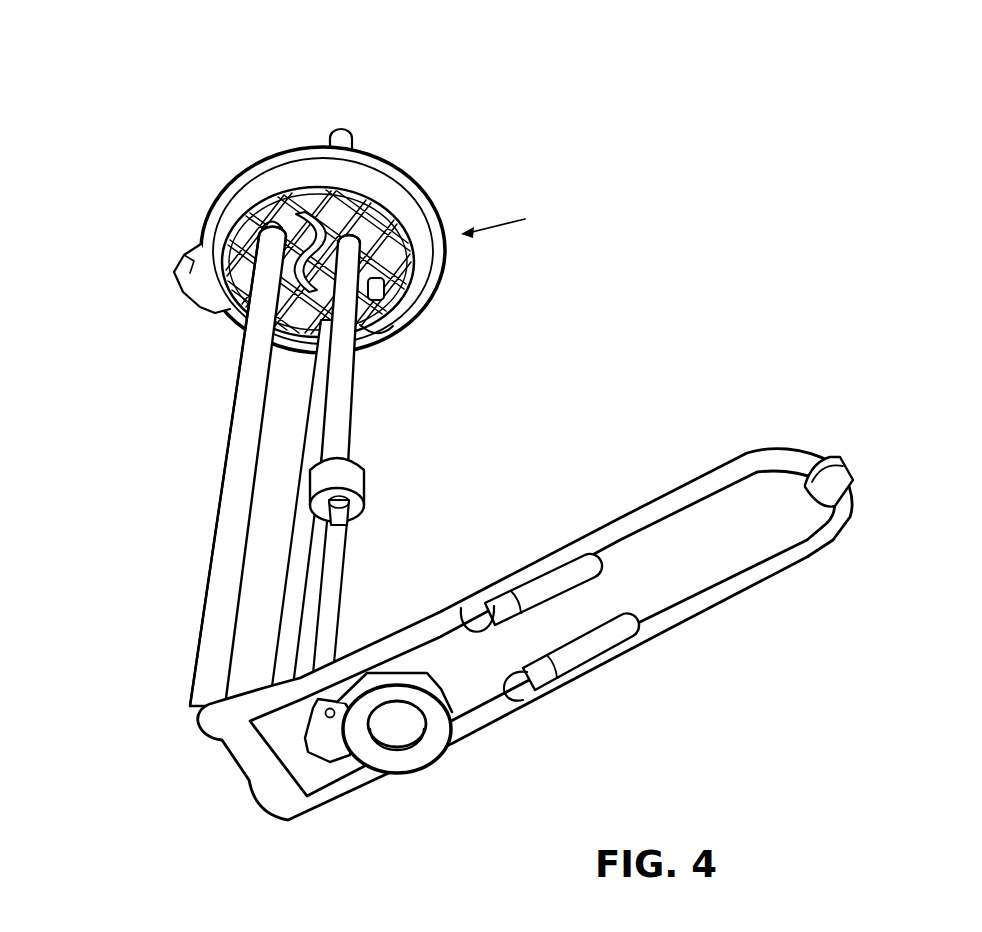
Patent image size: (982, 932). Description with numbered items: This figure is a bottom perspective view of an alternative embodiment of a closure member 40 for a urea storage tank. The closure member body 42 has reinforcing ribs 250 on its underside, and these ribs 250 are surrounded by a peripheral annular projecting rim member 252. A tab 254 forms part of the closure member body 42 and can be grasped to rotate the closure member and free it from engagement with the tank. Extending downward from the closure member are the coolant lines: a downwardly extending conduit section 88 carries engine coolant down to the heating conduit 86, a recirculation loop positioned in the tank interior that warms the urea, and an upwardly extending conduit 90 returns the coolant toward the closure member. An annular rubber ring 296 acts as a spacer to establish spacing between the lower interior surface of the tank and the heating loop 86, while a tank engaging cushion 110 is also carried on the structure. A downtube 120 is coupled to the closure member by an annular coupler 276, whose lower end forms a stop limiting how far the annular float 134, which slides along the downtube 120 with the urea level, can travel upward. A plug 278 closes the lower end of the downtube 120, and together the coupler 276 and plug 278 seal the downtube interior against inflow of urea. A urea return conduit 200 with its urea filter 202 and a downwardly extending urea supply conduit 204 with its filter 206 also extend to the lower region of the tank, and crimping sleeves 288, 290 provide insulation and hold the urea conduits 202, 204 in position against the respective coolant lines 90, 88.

The closure member 40 is at (509, 220).
The closure member body 42 is at (427, 270).
The heating conduit 86 is at (750, 582).
The downwardly extending conduit section 88 is at (280, 363).
The upwardly extending conduit 90 is at (255, 270).
The tank engaging cushion 110 is at (423, 755).
The downtube 120 is at (343, 408).
The float 134 is at (359, 480).
The urea return conduit 200 is at (270, 218).
The urea filter 202 is at (572, 574).
The downwardly extending conduit 204 is at (380, 330).
The filter 206 is at (600, 637).
The reinforcing ribs 250 is at (393, 227).
The peripheral annular projecting rim member 252 is at (353, 178).
The tab 254 is at (191, 294).
The annular coupler 276 is at (350, 262).
The plug 278 is at (330, 742).
The crimping sleeve 288 is at (287, 585).
The crimping sleeve 290 is at (221, 503).
The annular rubber ring 296 is at (846, 465).